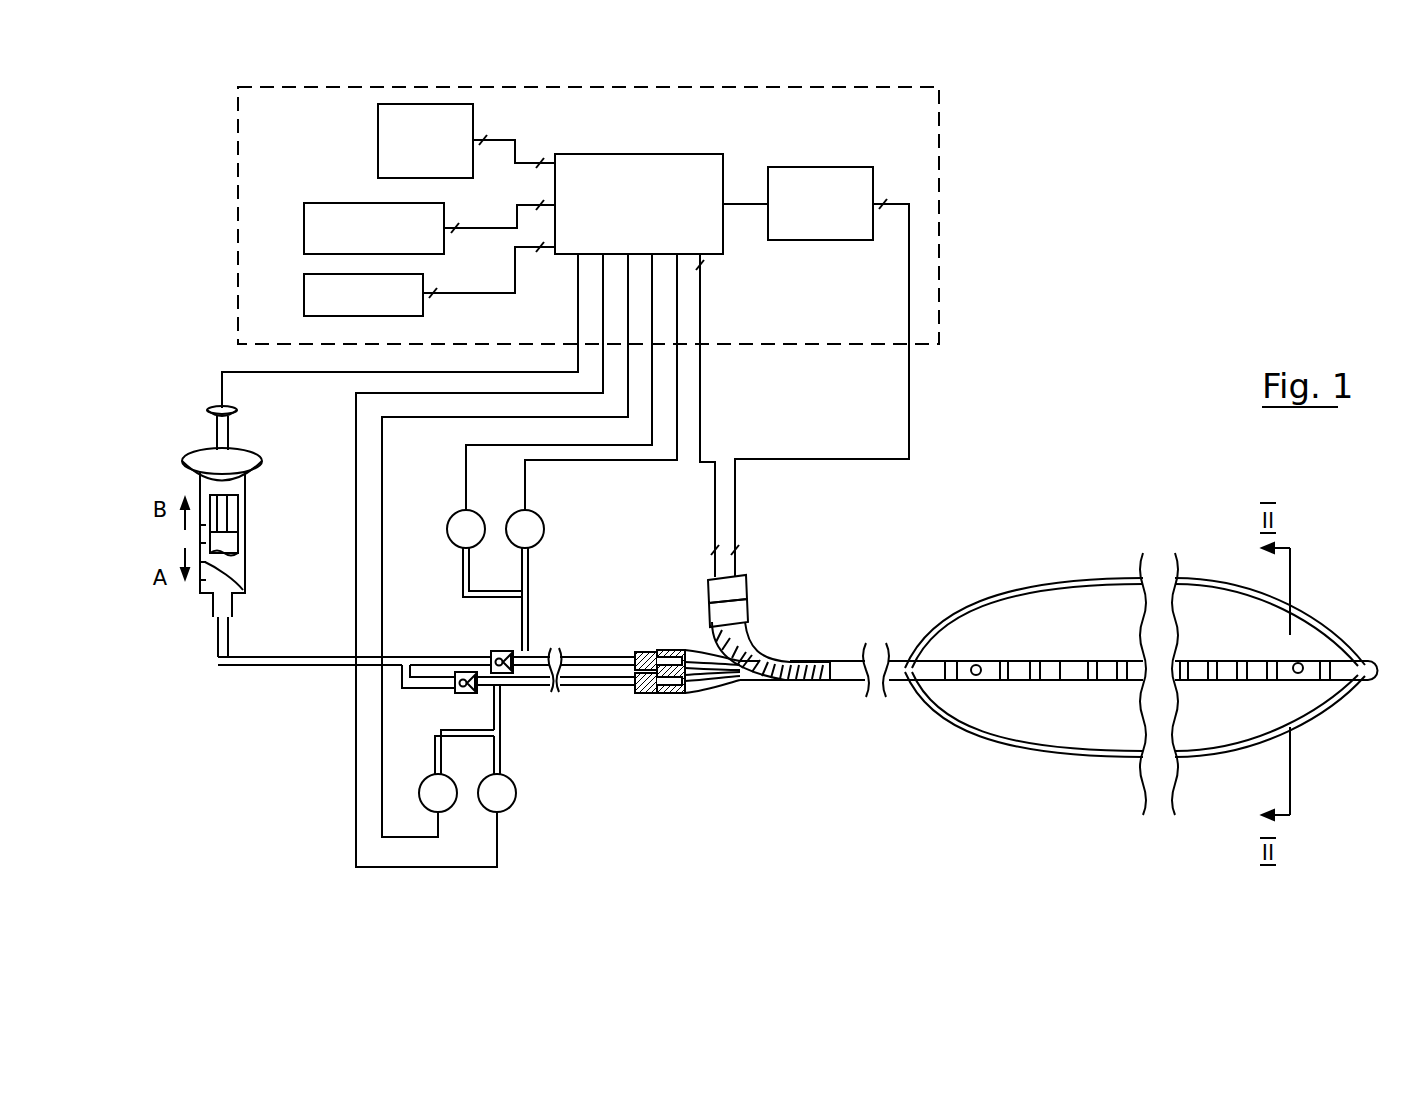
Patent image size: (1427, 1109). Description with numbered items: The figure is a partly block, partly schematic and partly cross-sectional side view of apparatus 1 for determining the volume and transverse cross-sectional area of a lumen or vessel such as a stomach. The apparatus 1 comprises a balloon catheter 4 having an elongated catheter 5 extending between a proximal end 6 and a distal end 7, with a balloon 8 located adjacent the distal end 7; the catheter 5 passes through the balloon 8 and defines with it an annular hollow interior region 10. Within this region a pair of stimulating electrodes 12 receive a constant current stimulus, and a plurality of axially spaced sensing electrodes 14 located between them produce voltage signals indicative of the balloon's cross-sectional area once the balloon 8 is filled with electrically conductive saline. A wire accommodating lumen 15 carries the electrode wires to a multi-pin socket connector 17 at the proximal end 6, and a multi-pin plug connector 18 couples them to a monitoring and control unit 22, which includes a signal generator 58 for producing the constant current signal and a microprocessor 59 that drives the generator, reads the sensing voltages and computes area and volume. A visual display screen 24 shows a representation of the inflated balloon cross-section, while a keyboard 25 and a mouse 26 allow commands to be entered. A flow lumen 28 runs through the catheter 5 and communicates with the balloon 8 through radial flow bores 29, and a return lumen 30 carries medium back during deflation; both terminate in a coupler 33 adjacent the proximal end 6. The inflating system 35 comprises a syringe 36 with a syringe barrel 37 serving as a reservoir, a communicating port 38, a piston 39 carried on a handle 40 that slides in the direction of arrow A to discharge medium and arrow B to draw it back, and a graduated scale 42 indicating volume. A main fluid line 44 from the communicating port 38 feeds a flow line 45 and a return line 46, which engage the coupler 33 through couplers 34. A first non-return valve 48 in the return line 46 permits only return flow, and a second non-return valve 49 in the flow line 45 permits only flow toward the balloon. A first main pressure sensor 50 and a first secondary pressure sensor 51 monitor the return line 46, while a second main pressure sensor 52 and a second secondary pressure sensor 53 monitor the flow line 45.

The apparatus 1 is at (1148, 219).
The balloon catheter 4 is at (839, 765).
The catheter 5 is at (898, 673).
The proximal end 6 is at (750, 673).
The distal end 7 is at (1377, 665).
The balloon 8 is at (1110, 578).
The annular hollow interior region 10 is at (1090, 733).
The stimulating electrodes 12 is at (953, 667).
The sensing electrodes 14 is at (1068, 663).
The wire accommodating lumen 15 is at (797, 658).
The multi-pin socket connector 17 is at (748, 607).
The multi-pin plug connector 18 is at (737, 583).
The monitoring and control unit 22 is at (940, 172).
The visual display screen 24 is at (378, 125).
The keyboard 25 is at (357, 202).
The mouse 26 is at (304, 297).
The flow lumen 28 is at (700, 650).
The flow bores 29 is at (977, 675).
The return lumen 30 is at (705, 680).
The coupler 33 is at (688, 690).
The couplers 34 is at (645, 652).
The system for inflating the balloon 35 is at (292, 765).
The syringe 36 is at (237, 478).
The syringe barrel 37 is at (235, 570).
The communicating port 38 is at (212, 605).
The piston 39 is at (233, 540).
The handle 40 is at (240, 418).
The graduated scale 42 is at (243, 590).
The main fluid line 44 is at (258, 668).
The flow line 45 is at (540, 655).
The return line 46 is at (527, 688).
The first non-return valve 48 is at (462, 695).
The second non-return valve 49 is at (493, 653).
The first main pressure sensor 50 is at (515, 805).
The first secondary pressure sensor 51 is at (422, 785).
The second main pressure sensor 52 is at (535, 512).
The second secondary pressure sensor 53 is at (452, 520).
The signal generator 58 is at (824, 167).
The microprocessor 59 is at (680, 152).